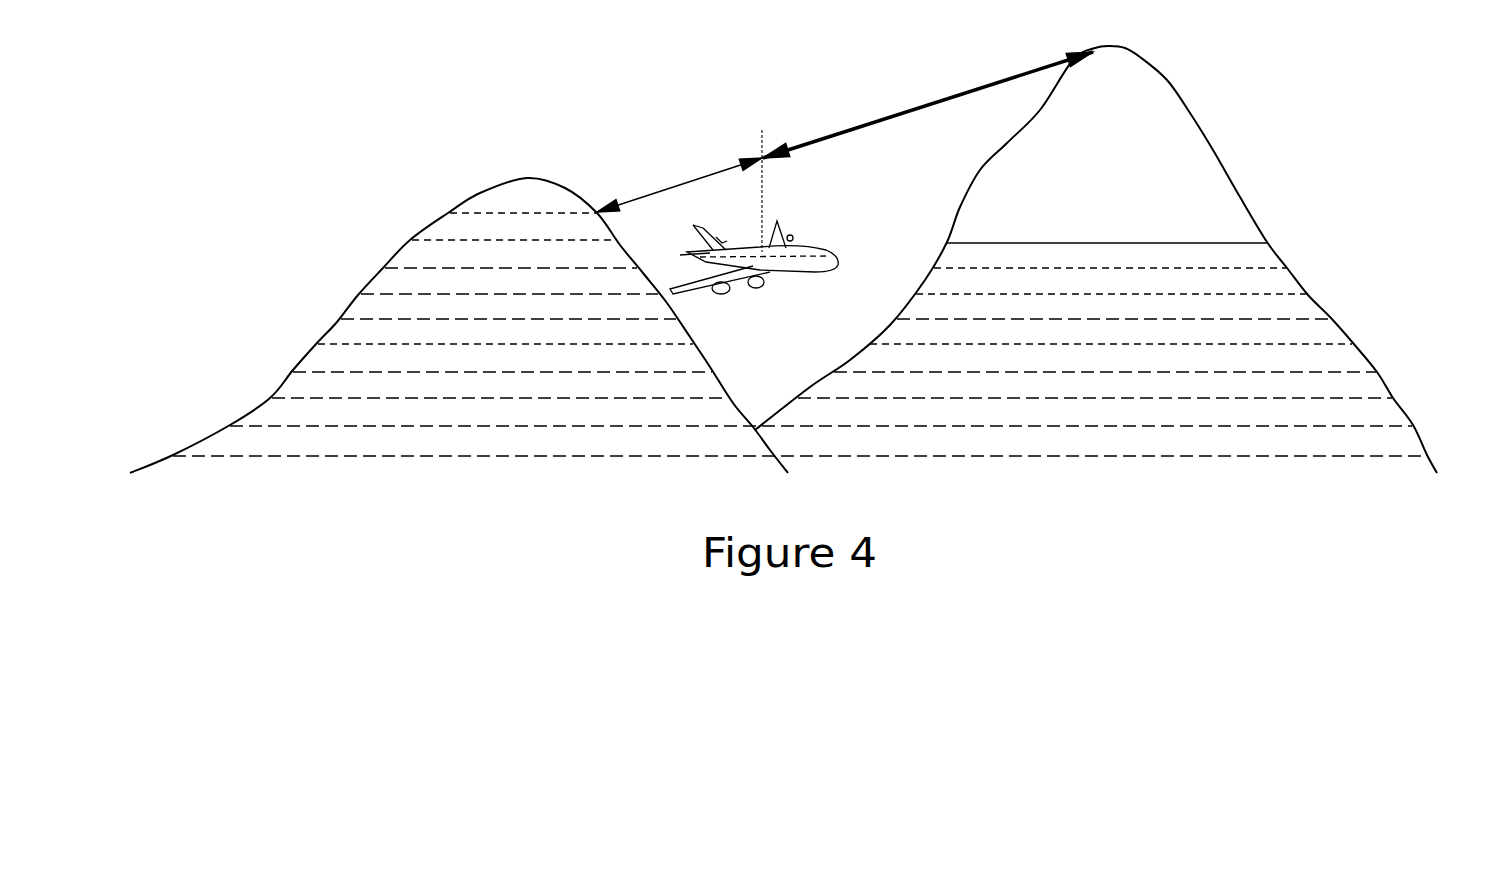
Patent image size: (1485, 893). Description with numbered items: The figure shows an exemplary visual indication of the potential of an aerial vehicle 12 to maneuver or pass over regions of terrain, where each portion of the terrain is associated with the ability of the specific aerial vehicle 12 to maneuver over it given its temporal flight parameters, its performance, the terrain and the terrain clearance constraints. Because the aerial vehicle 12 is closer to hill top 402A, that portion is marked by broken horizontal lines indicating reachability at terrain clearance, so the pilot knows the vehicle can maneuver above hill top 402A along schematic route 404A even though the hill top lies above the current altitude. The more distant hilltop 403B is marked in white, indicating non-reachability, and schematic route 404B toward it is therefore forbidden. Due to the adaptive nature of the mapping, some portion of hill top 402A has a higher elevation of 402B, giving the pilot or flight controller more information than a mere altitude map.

The aerial vehicle 12 is at (806, 243).
The hill top 402A is at (549, 292).
The higher-elevation portion 402B is at (1146, 346).
The hilltop 403B is at (1146, 228).
The schematic route 404A is at (672, 188).
The schematic route 404B is at (932, 104).